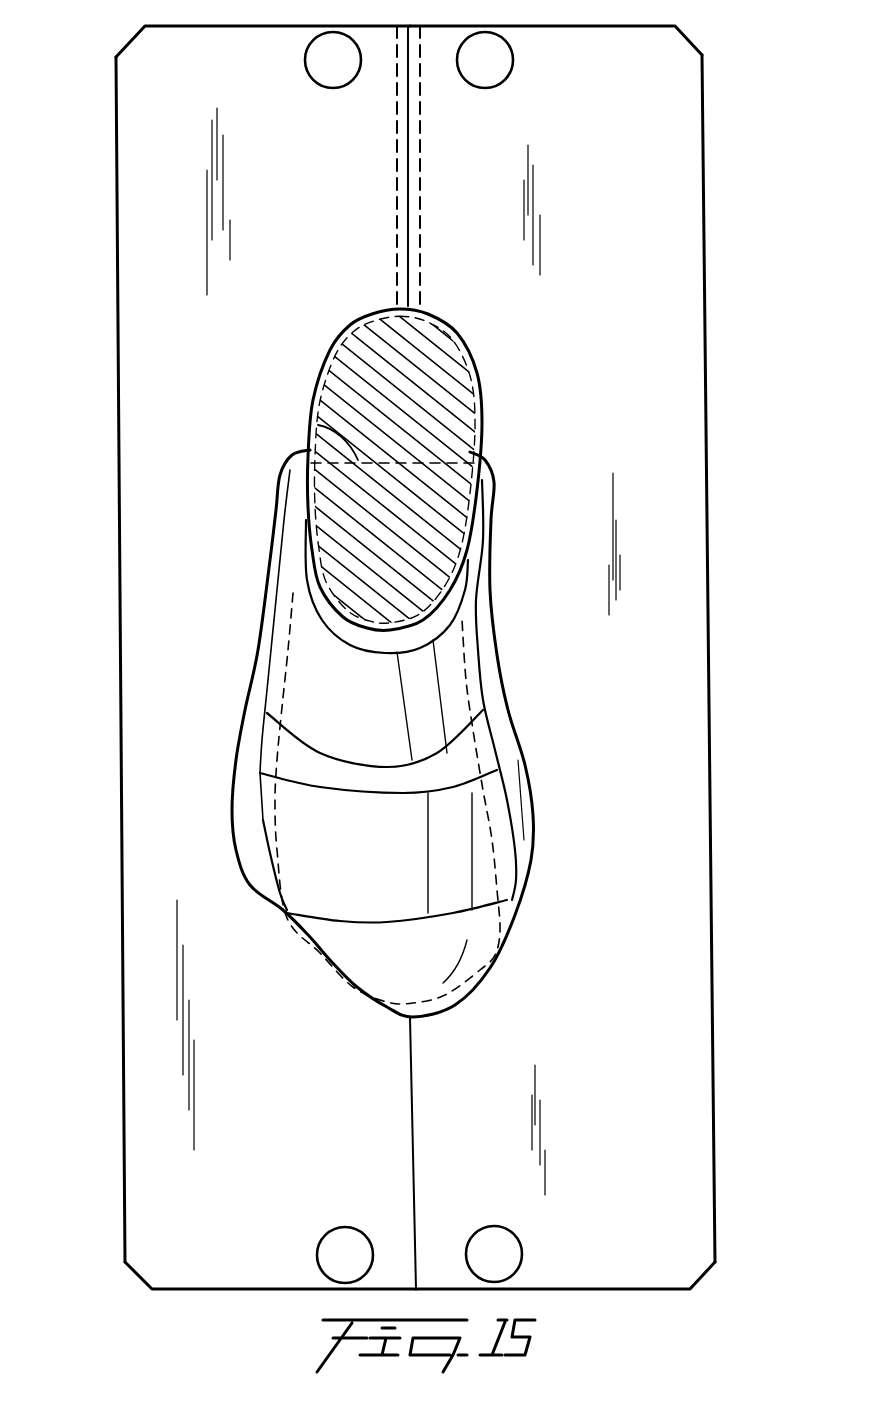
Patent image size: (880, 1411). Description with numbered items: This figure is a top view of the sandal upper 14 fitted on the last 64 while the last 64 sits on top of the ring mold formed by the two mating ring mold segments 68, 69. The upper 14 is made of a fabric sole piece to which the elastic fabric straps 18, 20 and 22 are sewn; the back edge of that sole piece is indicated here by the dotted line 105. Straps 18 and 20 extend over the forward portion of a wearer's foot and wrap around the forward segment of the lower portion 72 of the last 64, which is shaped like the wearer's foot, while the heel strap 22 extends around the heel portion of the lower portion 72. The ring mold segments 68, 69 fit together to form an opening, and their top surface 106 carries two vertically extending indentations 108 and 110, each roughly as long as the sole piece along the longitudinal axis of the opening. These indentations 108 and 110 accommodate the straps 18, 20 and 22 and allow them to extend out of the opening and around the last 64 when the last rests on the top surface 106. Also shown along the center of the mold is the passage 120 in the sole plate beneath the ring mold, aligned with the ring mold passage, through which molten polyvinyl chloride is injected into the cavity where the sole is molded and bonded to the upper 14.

The upper 14 is at (440, 648).
The strap 18 is at (485, 850).
The strap 20 is at (467, 657).
The heel strap 22 is at (440, 465).
The last 64 is at (448, 427).
The ring mold segment 68 is at (150, 263).
The ring mold segment 69 is at (673, 380).
The lower portion of last 72 is at (467, 947).
The dotted line 105 is at (312, 423).
The top surface 106 is at (147, 143).
The indentation 108 is at (283, 563).
The indentation 110 is at (480, 557).
The passage 120 is at (413, 45).